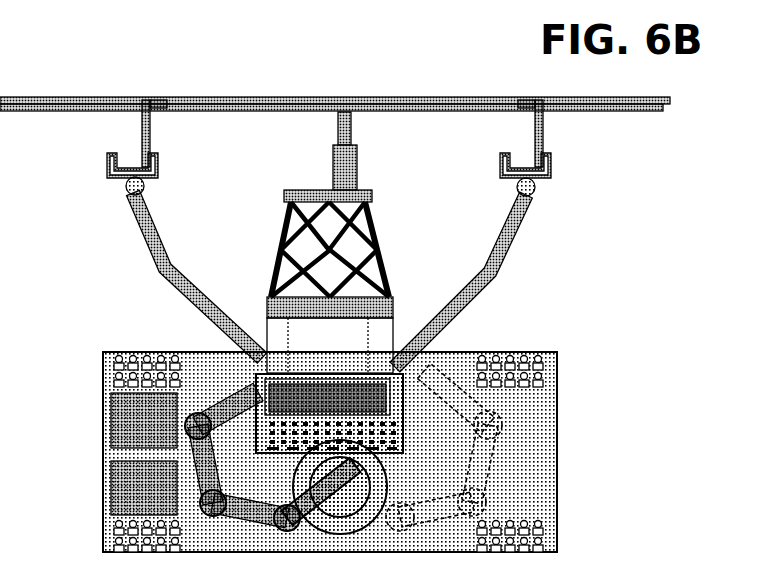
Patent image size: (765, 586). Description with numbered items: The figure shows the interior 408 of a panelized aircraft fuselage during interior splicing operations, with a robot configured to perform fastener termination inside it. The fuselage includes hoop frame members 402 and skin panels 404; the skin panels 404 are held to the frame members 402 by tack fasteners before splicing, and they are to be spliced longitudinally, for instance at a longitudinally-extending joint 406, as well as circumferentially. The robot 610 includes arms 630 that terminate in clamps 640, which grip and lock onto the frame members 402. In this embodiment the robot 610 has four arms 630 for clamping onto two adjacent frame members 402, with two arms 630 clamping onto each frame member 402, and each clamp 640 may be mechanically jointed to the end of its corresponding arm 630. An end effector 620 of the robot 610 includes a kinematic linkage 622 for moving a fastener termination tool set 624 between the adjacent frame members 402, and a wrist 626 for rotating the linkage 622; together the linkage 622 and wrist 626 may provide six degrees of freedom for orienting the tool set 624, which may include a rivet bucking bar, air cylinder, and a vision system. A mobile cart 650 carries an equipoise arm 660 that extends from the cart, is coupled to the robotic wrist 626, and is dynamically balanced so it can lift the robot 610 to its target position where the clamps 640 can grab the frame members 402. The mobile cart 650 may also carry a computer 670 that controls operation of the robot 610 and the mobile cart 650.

The hoop frame members 402 is at (141, 130).
The skin panels 404 is at (122, 97).
The longitudinally-extending joint 406 is at (250, 109).
The interior 408 is at (602, 211).
The robot 610 is at (394, 335).
The end effector 620 is at (339, 223).
The kinematic linkage 622 is at (289, 230).
The fastener termination tool set 624 is at (335, 153).
The wrist 626 is at (268, 335).
The arms 630 is at (151, 270).
The clamps 640 is at (105, 170).
The mobile cart 650 is at (558, 518).
The equipoise arm 660 is at (228, 395).
The computer 670 is at (393, 405).